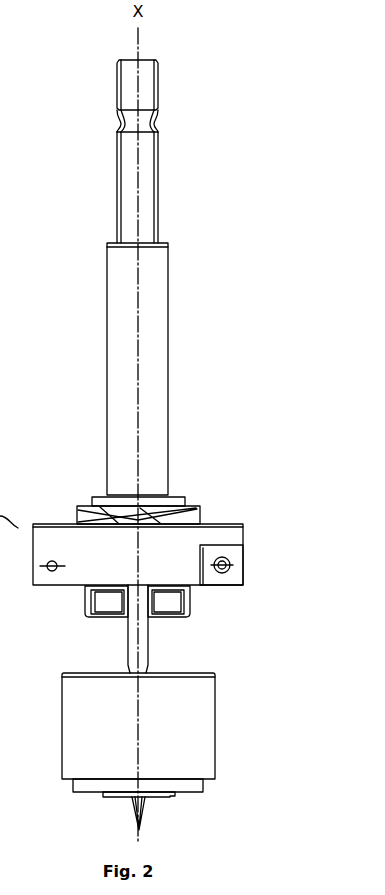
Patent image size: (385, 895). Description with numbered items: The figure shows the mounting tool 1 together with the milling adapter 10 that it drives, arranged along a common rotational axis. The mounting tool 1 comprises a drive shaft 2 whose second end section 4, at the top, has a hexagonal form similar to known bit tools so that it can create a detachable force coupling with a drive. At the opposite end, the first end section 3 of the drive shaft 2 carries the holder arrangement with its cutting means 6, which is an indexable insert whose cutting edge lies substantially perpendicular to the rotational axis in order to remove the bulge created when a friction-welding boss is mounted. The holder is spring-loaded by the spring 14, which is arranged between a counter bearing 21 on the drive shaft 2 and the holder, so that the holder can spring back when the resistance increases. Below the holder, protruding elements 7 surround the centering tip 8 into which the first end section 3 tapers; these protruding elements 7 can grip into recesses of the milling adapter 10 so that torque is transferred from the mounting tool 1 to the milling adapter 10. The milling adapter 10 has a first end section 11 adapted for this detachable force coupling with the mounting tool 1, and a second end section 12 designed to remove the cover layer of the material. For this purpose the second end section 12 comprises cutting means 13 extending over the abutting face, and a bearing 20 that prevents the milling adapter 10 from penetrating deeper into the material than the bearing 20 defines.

The mounting tool 1 is at (207, 43).
The drive shaft 2 is at (115, 333).
The first end section 3 is at (267, 488).
The second end section 4 is at (97, 57).
The cutting means 6 is at (213, 582).
The protruding elements 7 is at (90, 605).
The centering tip 8 is at (128, 633).
The milling adapter 10 is at (267, 668).
The first end section 11 is at (215, 676).
The second end section 12 is at (190, 784).
The cutting means 13 is at (105, 794).
The spring 14 is at (85, 505).
The bearing 20 is at (62, 778).
The counter bearing 21 is at (180, 497).